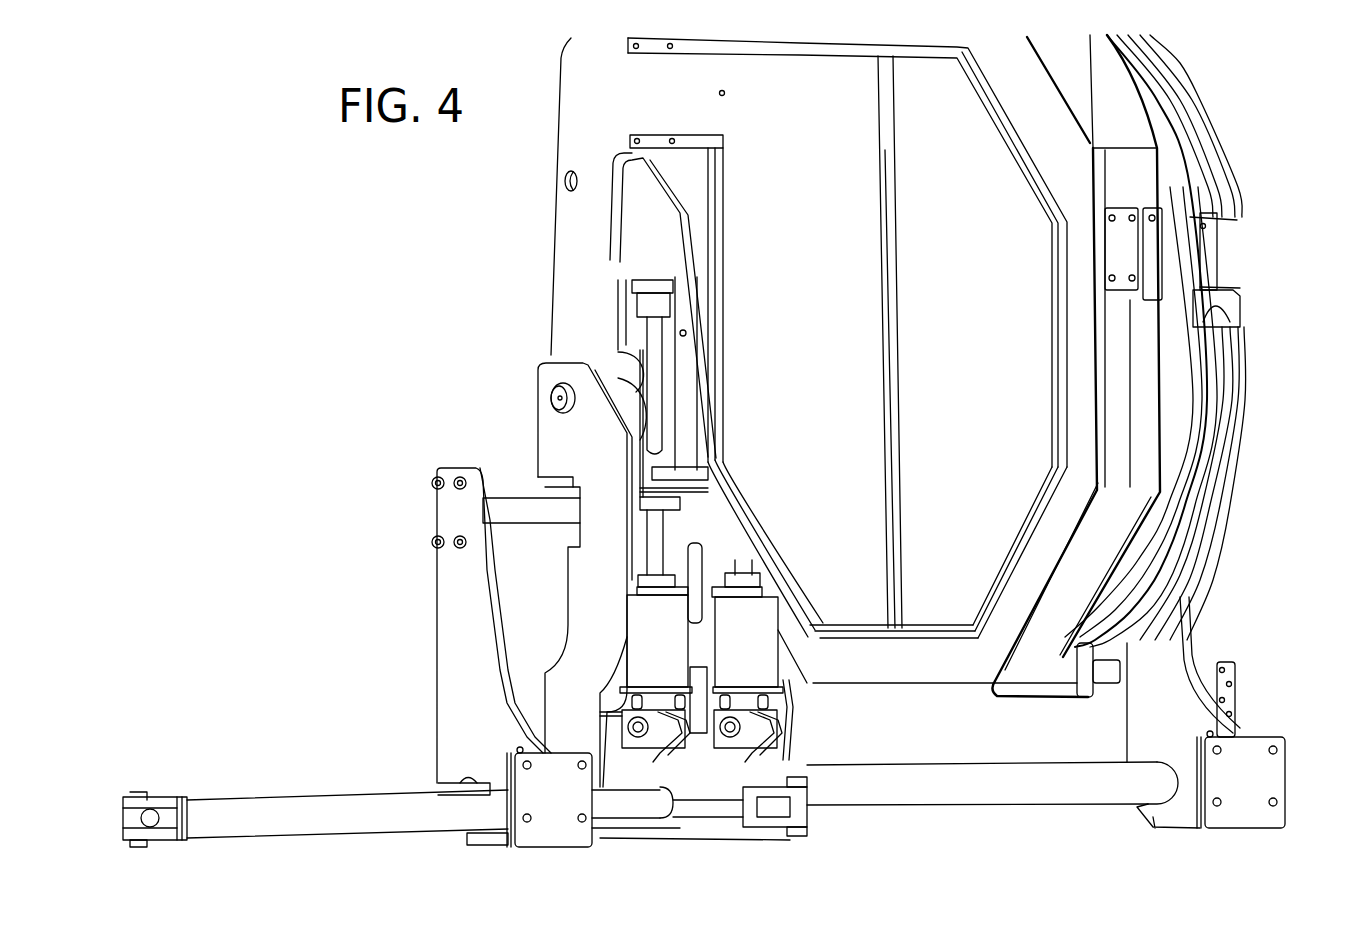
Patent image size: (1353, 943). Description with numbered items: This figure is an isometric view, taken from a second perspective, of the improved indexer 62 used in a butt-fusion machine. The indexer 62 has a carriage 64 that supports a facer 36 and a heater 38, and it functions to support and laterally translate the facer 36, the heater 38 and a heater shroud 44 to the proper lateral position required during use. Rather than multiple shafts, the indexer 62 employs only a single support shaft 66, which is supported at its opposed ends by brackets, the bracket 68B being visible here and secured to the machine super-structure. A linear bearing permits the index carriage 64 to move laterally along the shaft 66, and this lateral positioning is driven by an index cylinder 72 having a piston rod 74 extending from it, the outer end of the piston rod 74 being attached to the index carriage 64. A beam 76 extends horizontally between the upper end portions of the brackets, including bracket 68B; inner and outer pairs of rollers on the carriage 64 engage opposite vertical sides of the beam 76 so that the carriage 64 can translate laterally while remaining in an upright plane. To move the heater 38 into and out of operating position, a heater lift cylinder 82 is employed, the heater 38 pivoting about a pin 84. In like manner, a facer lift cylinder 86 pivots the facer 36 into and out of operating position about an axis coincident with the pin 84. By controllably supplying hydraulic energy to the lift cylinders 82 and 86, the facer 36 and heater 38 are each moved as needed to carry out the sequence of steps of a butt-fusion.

The facer 36 is at (1222, 250).
The heater 38 is at (1105, 505).
The heater shroud 44 is at (580, 147).
The indexer 62 is at (338, 337).
The carriage 64 is at (593, 573).
The support shaft 66 is at (958, 797).
The bracket 68B is at (453, 650).
The index cylinder 72 is at (313, 803).
The piston rod 74 is at (723, 805).
The beam 76 is at (518, 510).
The heater lift cylinder 82 is at (663, 633).
The pin 84 is at (553, 393).
The facer lift cylinder 86 is at (768, 650).